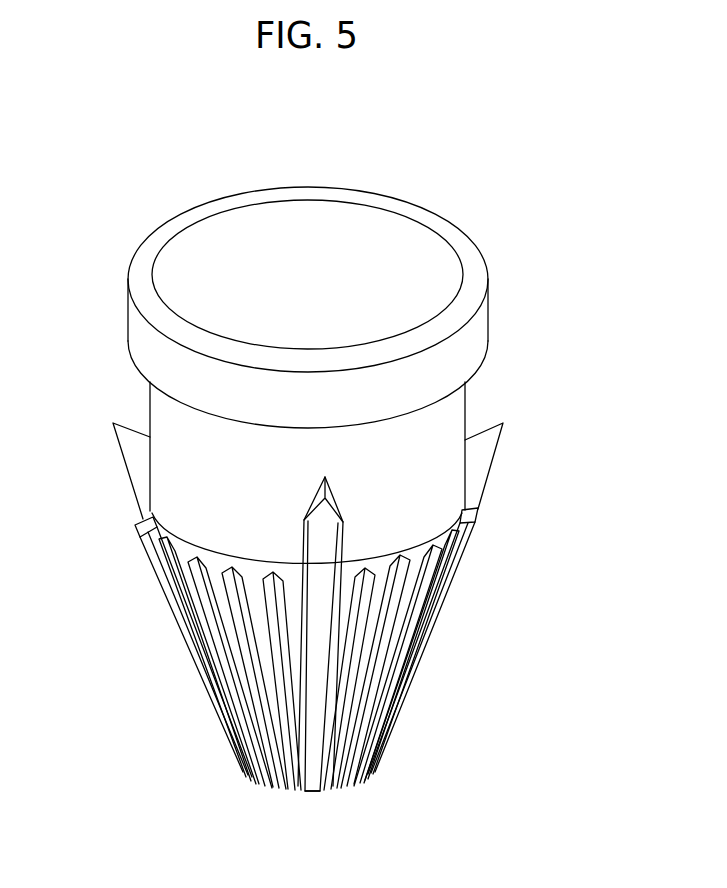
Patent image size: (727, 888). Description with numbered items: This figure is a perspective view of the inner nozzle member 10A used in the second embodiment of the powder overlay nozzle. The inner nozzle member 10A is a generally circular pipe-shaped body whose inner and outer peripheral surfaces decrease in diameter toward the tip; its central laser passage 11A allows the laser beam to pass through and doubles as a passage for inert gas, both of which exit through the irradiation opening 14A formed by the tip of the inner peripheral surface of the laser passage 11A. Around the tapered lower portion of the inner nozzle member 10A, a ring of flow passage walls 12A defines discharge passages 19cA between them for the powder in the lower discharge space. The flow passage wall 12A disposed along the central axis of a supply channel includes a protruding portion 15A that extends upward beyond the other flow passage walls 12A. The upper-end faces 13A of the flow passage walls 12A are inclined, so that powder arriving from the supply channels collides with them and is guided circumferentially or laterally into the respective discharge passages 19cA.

The inner nozzle member 10A is at (470, 200).
The laser passage 11A is at (331, 287).
The flow passage walls 12A is at (478, 512).
The upper-end faces 13A is at (383, 623).
The irradiation opening 14A is at (350, 783).
The protruding portion 15A is at (300, 517).
The discharge passages 19cA is at (452, 533).